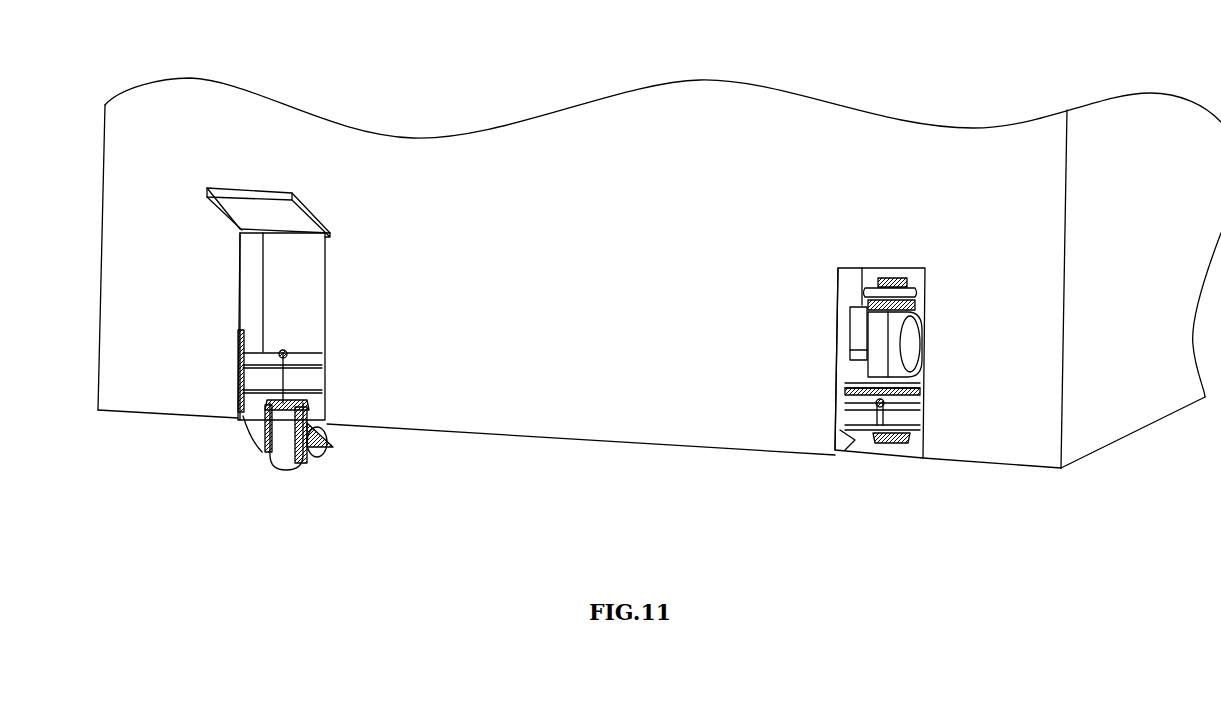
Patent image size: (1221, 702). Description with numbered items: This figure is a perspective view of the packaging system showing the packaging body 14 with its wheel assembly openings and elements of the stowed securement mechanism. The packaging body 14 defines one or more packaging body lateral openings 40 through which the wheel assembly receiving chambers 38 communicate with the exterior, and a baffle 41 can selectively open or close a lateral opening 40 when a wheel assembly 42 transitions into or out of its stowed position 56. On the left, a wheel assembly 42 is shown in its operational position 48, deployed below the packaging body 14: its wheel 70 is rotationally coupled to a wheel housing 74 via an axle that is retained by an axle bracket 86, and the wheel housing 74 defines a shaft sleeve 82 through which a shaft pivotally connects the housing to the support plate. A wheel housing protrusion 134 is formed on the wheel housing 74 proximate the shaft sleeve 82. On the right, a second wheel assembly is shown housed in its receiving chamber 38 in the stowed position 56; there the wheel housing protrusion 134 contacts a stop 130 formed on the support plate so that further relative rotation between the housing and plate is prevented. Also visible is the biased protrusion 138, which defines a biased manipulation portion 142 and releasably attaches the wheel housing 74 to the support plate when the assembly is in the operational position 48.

The packaging body 14 is at (622, 127).
The wheel assembly receiving chamber 38 is at (310, 272).
The packaging body lateral opening 40 is at (250, 263).
The baffle 41 is at (268, 215).
The wheel assembly 42 is at (256, 495).
The operational position 48 is at (310, 496).
The stowed position 56 is at (938, 336).
The wheel 70 is at (286, 464).
The wheel housing 74 is at (255, 430).
The shaft sleeve 82 is at (840, 447).
The axle bracket 86 is at (318, 452).
The stop 130 is at (903, 445).
The wheel housing protrusion 134 is at (283, 348).
The biased protrusion 138 is at (899, 262).
The biased manipulation portion 142 is at (903, 283).